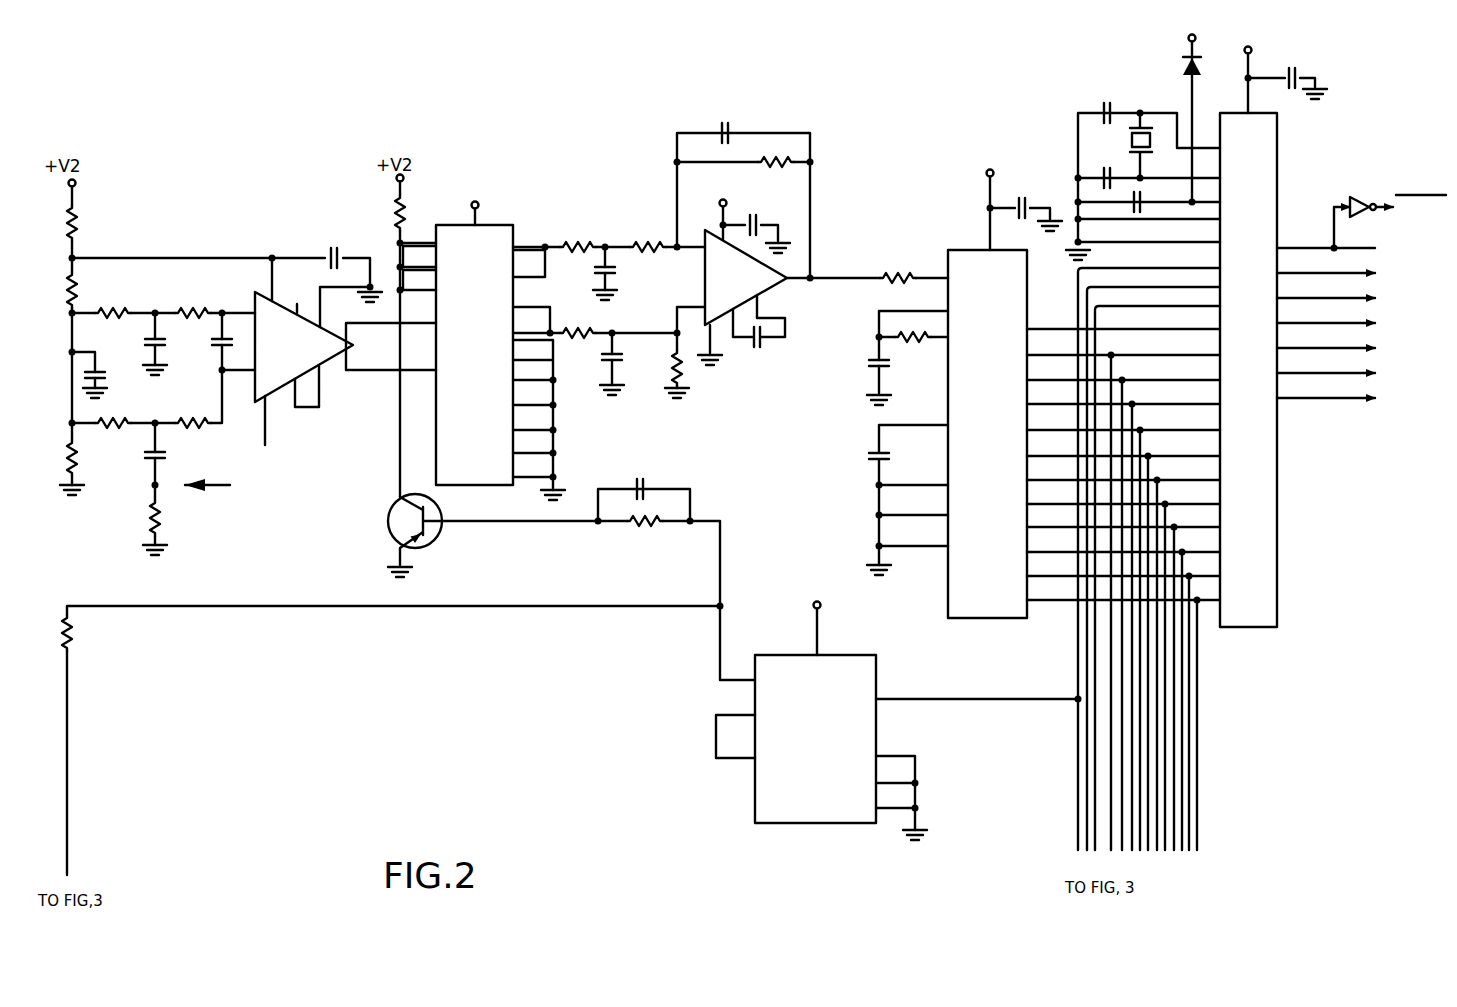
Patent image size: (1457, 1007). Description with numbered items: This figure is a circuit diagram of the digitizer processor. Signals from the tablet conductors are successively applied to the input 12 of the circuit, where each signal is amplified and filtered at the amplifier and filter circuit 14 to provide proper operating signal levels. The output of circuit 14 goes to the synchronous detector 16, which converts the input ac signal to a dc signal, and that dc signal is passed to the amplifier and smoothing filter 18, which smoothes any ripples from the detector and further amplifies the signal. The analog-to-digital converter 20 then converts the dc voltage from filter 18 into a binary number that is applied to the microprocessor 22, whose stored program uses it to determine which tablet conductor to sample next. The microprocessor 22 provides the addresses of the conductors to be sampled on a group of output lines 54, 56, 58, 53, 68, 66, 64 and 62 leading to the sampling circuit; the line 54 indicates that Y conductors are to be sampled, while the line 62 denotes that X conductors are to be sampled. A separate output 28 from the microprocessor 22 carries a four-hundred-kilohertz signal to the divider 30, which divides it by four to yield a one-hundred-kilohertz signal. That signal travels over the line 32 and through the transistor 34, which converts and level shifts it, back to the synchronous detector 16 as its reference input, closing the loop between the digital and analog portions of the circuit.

The input 12 is at (189, 480).
The amplifier and filter circuit 14 is at (308, 421).
The synchronous detector 16 is at (500, 216).
The amplifier and smoothing filter 18 is at (690, 278).
The analog-to-digital converter 20 is at (956, 236).
The microprocessor 22 is at (1280, 171).
The output 28 is at (1066, 297).
The divider 30 is at (845, 655).
The line 32 is at (718, 633).
The transistor 34 is at (392, 511).
The line 54 is at (1352, 248).
The line 56 is at (1353, 266).
The line 58 is at (1353, 291).
The multiplexer line MUX3 53 is at (1353, 316).
The line 68 is at (1356, 341).
The line 66 is at (1356, 366).
The line 64 is at (1356, 391).
The line 62 is at (1378, 203).